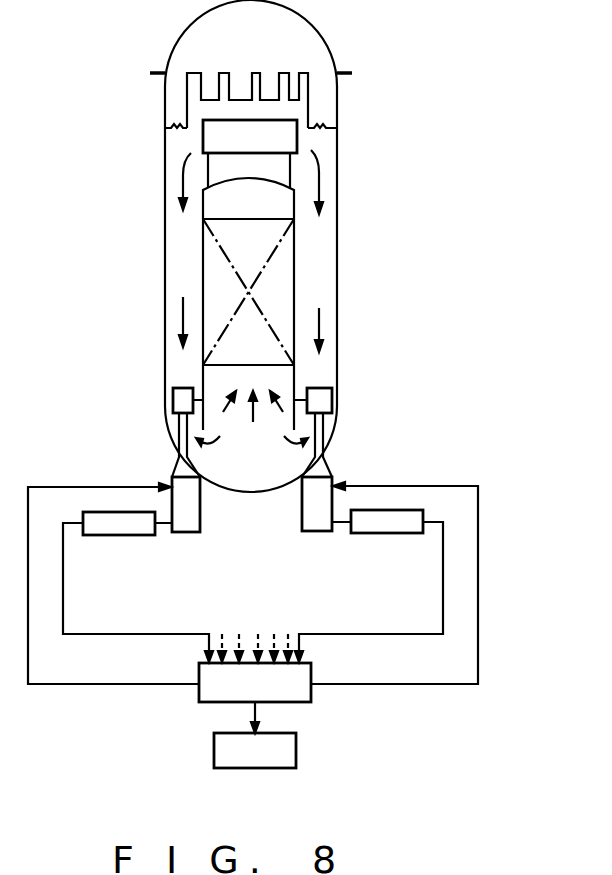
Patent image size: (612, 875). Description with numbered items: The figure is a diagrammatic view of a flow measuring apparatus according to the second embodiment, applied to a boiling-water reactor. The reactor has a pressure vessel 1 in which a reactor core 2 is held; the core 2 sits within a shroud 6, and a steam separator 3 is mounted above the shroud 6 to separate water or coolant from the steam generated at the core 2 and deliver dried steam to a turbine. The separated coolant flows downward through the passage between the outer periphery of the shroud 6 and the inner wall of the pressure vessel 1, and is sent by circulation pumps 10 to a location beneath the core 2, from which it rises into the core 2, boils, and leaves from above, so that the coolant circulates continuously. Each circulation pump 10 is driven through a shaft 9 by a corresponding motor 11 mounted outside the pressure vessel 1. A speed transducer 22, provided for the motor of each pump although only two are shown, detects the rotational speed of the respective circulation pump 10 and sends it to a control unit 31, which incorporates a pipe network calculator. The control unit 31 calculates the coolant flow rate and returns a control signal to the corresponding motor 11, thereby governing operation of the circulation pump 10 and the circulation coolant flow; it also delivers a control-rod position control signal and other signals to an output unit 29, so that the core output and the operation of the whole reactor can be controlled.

The pressure vessel 1 is at (338, 177).
The reactor core 2 is at (210, 268).
The steam separator 3 is at (290, 130).
The shroud 6 is at (294, 265).
The shaft 9 is at (178, 428).
The circulation pump 10 is at (175, 390).
The motor 11 is at (172, 481).
The speed transducer 22 is at (90, 512).
The output unit 29 is at (290, 750).
The control unit 31 is at (305, 690).